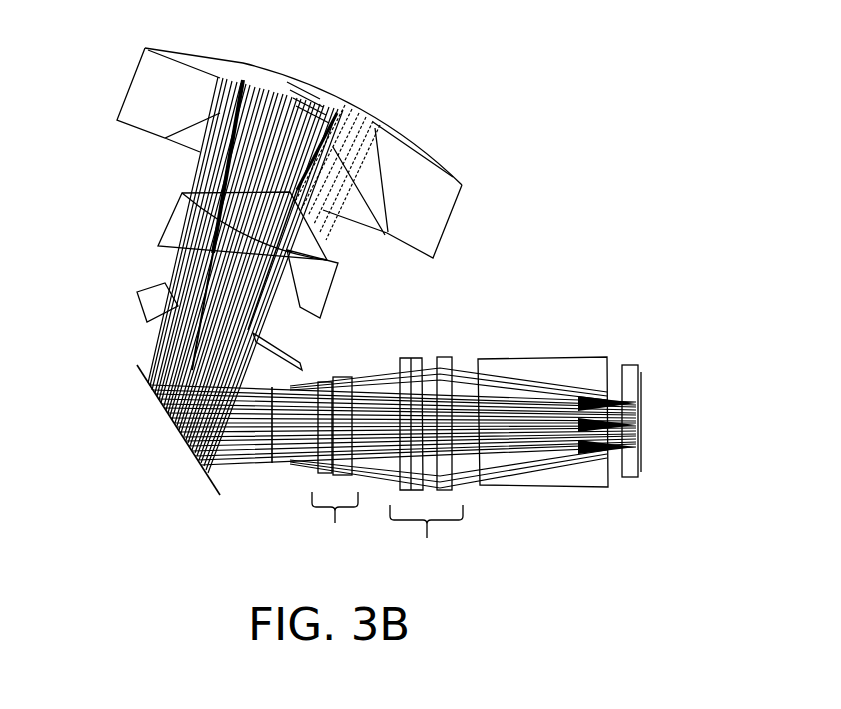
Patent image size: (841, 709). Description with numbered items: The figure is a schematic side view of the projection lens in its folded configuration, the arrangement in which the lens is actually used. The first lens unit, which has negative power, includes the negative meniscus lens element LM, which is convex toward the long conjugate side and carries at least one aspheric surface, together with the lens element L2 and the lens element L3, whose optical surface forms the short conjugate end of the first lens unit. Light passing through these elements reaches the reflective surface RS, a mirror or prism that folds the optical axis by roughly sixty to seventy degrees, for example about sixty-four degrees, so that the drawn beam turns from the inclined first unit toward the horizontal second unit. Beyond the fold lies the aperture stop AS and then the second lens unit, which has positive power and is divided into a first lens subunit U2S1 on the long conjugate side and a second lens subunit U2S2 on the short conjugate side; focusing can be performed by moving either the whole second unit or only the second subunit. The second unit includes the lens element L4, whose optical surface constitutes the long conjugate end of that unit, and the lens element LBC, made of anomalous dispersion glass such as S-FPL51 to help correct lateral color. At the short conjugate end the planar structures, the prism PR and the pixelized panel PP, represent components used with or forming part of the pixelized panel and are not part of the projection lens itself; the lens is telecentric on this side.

The negative meniscus lens element LM is at (433, 210).
The lens element L2 is at (183, 222).
The lens element L3 is at (153, 303).
The lens element L4 is at (323, 380).
The anomalous dispersion lens element LBC is at (405, 357).
The reflective surface RS is at (177, 423).
The aperture stop AS is at (267, 468).
The first lens subunit U2S1 is at (343, 530).
The second lens subunit U2S2 is at (432, 544).
The prism PR is at (528, 372).
The pixelized panel PP is at (640, 390).